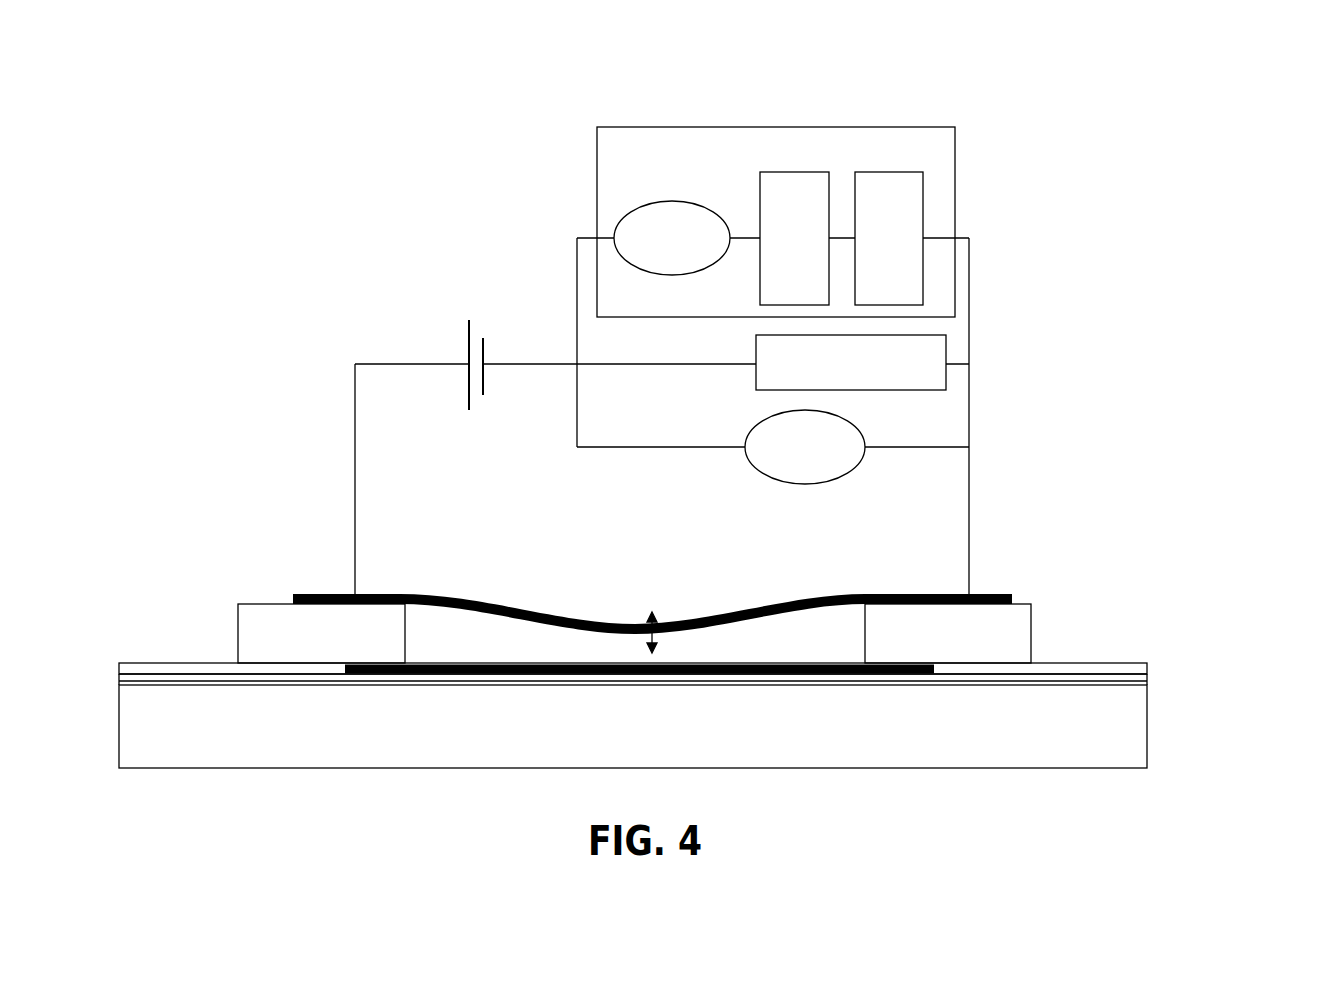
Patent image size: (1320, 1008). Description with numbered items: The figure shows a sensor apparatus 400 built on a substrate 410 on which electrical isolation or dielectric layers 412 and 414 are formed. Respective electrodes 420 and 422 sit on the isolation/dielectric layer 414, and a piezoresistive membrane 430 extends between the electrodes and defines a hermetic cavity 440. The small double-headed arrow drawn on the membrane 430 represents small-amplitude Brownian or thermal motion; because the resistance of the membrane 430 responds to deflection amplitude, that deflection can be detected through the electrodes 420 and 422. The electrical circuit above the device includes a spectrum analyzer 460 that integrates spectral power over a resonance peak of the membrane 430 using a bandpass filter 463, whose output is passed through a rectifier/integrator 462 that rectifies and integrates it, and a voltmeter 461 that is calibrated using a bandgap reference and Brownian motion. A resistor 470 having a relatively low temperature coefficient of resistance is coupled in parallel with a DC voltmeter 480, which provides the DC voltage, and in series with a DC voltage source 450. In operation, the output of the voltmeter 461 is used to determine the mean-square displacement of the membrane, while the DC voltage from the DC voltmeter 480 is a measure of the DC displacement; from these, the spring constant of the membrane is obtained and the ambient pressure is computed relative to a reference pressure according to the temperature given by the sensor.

The sensor apparatus 400 is at (1073, 118).
The substrate 410 is at (1147, 730).
The electrical isolation or dielectric layer 412 is at (1147, 683).
The electrical isolation or dielectric layer 414 is at (1147, 668).
The electrode 420 is at (262, 604).
The electrode 422 is at (1022, 604).
The piezoresistive membrane 430 is at (420, 594).
The hermetic cavity 440 is at (485, 643).
The DC voltage source 450 is at (476, 405).
The spectrum analyzer 460 is at (882, 127).
The voltmeter 461 is at (671, 201).
The rectifier/integrator 462 is at (788, 172).
The bandpass filter 463 is at (895, 172).
The resistor 470 is at (756, 346).
The DC voltmeter 480 is at (815, 485).